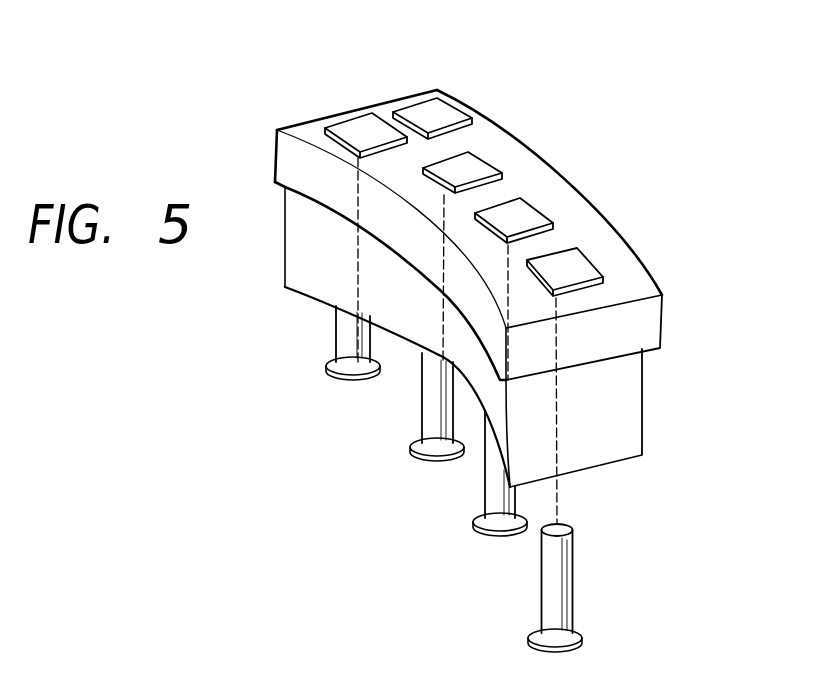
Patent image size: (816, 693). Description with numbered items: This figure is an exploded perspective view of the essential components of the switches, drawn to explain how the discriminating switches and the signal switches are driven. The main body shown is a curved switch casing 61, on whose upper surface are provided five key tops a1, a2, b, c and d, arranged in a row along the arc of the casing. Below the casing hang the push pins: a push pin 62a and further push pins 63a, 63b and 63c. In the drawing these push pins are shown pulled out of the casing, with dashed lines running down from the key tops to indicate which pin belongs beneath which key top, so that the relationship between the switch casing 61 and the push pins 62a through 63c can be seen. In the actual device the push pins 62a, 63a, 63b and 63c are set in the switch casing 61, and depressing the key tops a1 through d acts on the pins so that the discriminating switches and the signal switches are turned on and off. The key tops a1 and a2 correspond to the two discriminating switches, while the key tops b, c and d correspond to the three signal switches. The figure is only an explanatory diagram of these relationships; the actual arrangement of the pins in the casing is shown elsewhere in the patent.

The switch casing 61 is at (617, 243).
The key top a1 is at (355, 132).
The key top a2 is at (428, 112).
The key top b is at (470, 167).
The key top c is at (525, 215).
The key top d is at (587, 275).
The push pin 62a is at (345, 338).
The push pin 63a is at (437, 418).
The push pin 63b is at (497, 497).
The push pin 63c is at (553, 582).